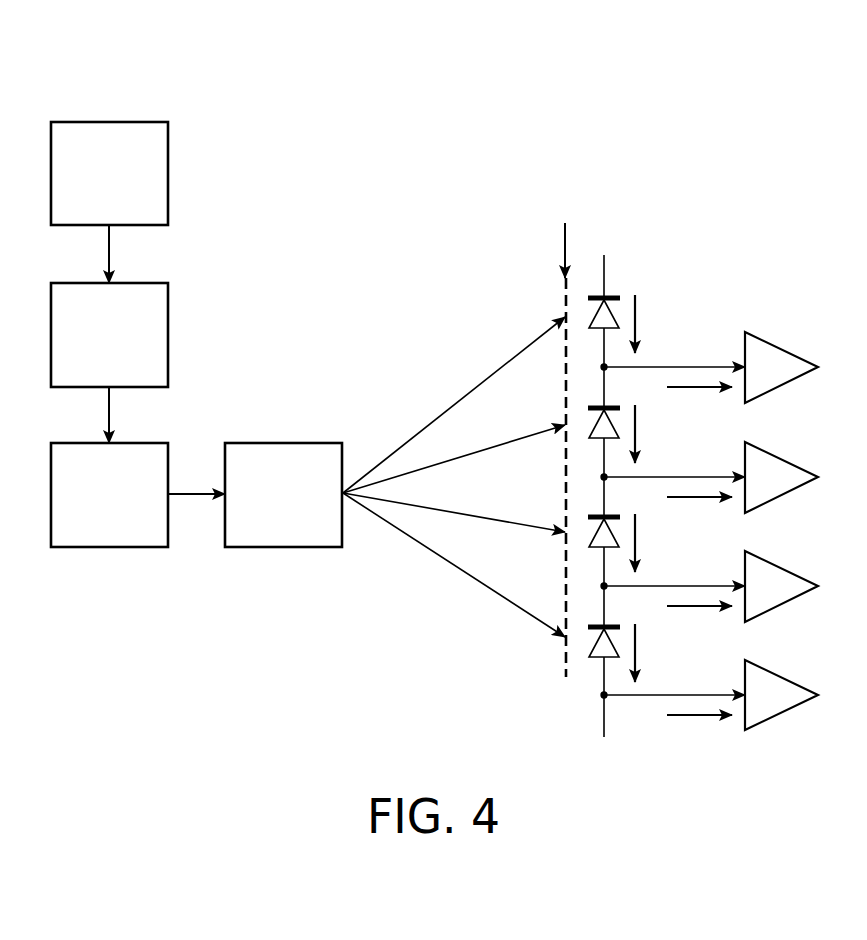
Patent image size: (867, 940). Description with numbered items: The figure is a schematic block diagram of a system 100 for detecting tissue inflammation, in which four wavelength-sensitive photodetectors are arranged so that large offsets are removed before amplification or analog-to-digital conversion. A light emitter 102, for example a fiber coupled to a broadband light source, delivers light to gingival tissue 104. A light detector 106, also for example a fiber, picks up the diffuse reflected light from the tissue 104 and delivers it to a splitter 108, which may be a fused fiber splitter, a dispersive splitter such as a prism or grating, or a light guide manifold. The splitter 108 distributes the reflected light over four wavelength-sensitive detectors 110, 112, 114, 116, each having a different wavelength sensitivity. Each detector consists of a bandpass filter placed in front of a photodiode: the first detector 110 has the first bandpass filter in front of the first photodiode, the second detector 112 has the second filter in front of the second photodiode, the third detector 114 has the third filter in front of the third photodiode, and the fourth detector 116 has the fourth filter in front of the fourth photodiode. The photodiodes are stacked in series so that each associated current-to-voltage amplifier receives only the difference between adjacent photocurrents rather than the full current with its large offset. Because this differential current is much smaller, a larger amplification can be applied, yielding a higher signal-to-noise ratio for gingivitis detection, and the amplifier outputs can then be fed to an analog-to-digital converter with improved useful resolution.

The system 100 is at (682, 92).
The light emitter 102 is at (88, 202).
The gingival tissue 104 is at (88, 362).
The light detector 106 is at (88, 524).
The splitter 108 is at (262, 524).
The wavelength-sensitive detector 110 is at (470, 296).
The wavelength-sensitive detector 112 is at (560, 393).
The wavelength-sensitive detector 114 is at (540, 568).
The wavelength-sensitive detector 116 is at (527, 658).